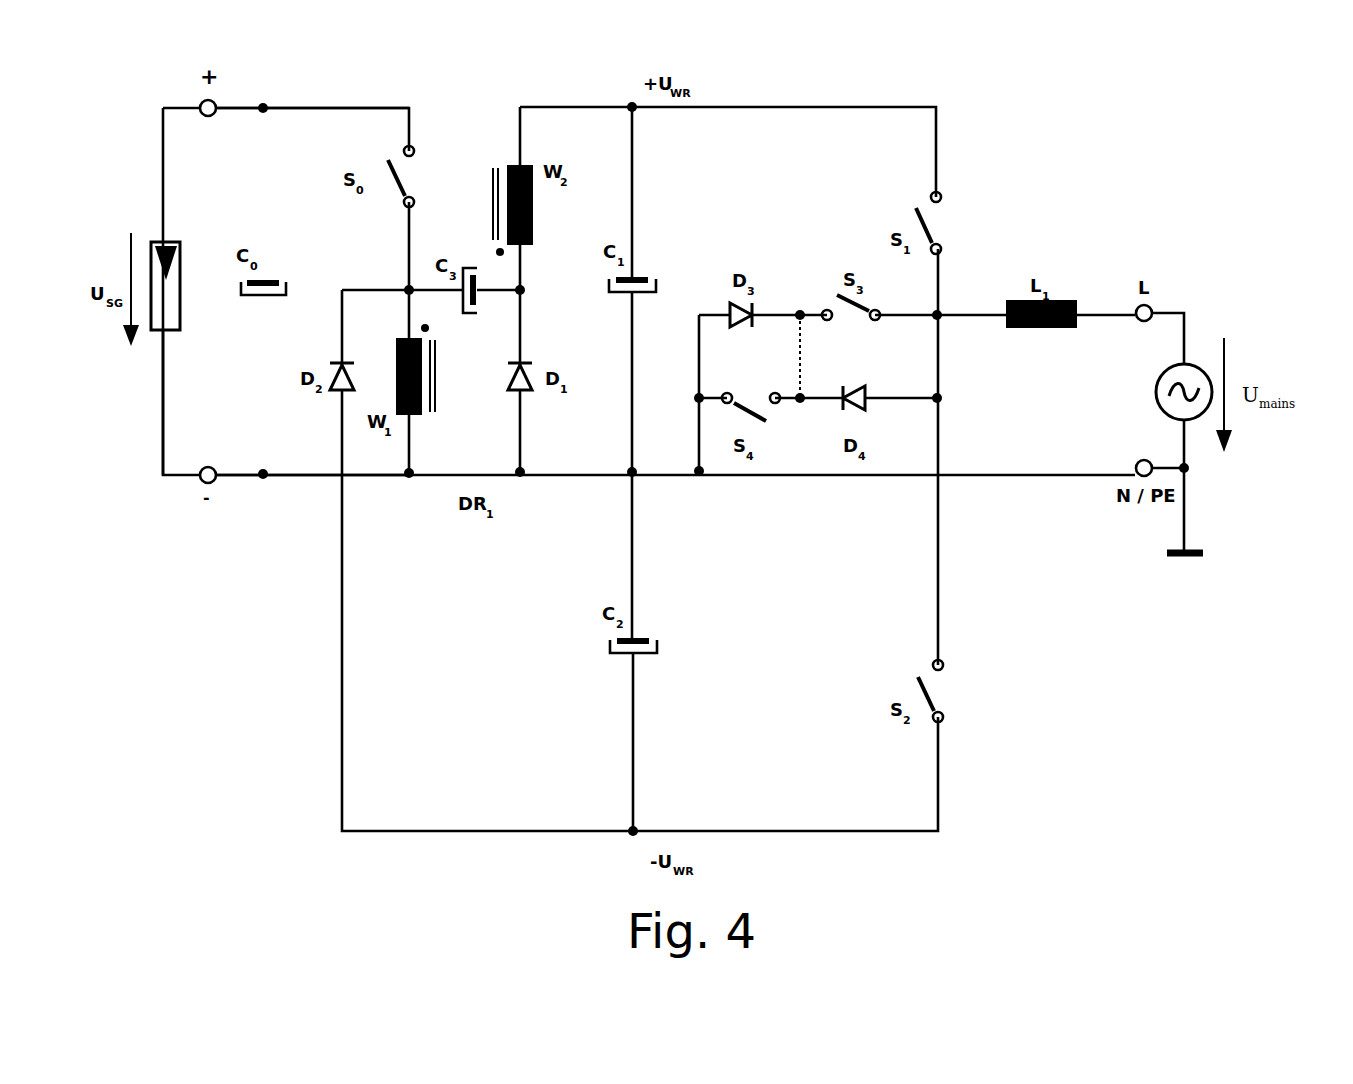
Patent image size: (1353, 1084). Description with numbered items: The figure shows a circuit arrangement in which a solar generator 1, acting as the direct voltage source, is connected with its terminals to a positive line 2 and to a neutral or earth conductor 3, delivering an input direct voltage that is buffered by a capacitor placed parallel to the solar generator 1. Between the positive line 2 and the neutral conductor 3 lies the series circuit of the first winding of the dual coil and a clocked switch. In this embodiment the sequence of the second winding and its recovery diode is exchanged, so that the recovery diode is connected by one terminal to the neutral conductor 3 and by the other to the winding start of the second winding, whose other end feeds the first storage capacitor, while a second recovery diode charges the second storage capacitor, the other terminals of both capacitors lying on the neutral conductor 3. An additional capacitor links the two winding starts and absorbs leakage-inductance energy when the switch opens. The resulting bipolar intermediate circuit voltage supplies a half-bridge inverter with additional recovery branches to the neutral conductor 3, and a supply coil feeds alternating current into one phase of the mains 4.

The solar generator 1 is at (183, 285).
The positive line 2 is at (272, 102).
The neutral or earth conductor 3 is at (272, 484).
The mains 4 is at (1148, 399).